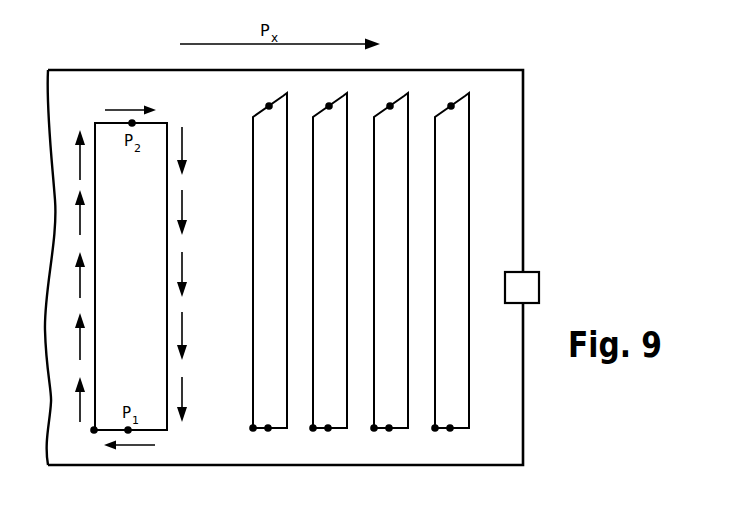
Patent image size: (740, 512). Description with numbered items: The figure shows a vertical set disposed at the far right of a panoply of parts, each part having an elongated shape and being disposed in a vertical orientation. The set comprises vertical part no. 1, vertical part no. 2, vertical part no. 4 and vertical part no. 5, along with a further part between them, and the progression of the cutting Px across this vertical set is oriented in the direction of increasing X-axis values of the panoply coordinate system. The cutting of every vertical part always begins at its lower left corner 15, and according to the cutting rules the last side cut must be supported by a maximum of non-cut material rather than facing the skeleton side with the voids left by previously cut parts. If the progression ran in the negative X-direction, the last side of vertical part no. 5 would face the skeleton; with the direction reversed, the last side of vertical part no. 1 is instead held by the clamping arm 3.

The clamping arm 3 is at (539, 288).
The lower left corner of vertical part 15 is at (93, 432).
The vertical part no. 5 is at (131, 276).
The vertical part no. 4 is at (268, 270).
The vertical part no. 2 is at (328, 270).
The vertical part no. 1 is at (419, 270).